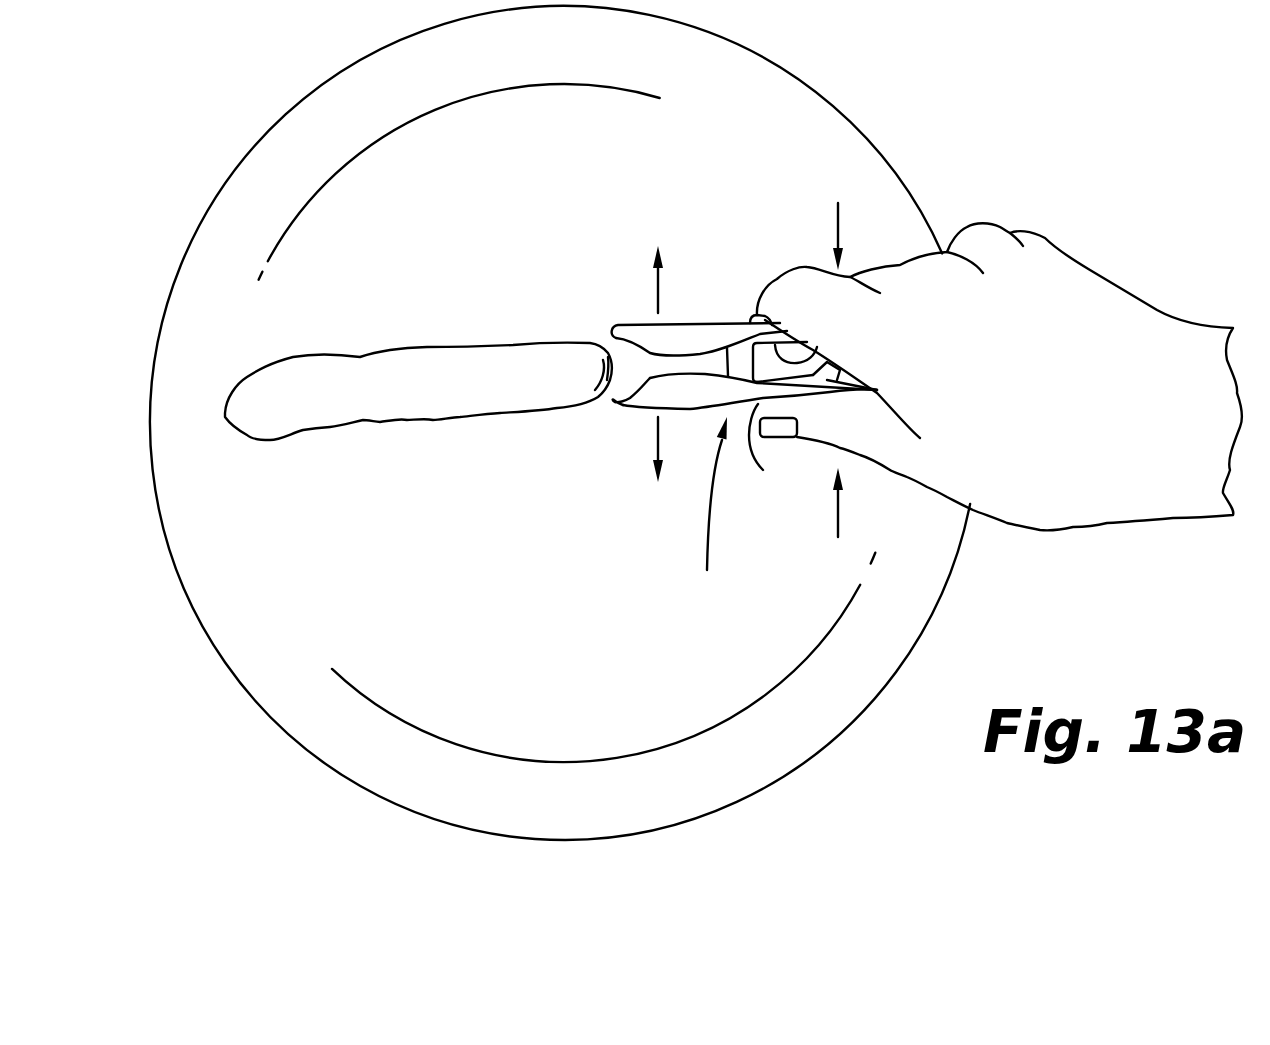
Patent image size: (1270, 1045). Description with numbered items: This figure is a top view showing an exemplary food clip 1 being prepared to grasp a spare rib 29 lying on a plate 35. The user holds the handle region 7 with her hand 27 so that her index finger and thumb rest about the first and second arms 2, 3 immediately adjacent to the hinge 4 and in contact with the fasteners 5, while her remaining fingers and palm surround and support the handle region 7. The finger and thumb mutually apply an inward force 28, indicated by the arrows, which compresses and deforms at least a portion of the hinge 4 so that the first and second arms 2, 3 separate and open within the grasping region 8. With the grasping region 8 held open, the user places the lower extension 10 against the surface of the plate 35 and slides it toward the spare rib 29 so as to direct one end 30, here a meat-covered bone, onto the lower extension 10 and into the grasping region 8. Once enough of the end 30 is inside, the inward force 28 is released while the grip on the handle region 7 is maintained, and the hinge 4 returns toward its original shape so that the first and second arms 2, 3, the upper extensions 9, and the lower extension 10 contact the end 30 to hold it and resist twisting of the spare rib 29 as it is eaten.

The food clip 1 is at (707, 570).
The first arm 2 is at (701, 328).
The second arm 3 is at (697, 407).
The hinge 4 is at (743, 363).
The fasteners 5 is at (757, 316).
The handle region 7 is at (797, 390).
The grasping region 8 is at (675, 324).
The upper extensions 9 is at (648, 390).
The lower extension 10 is at (617, 403).
The hand 27 is at (1027, 463).
The inward force 28 is at (839, 372).
The spare rib 29 is at (462, 347).
The end 30 is at (593, 405).
The plate 35 is at (560, 423).